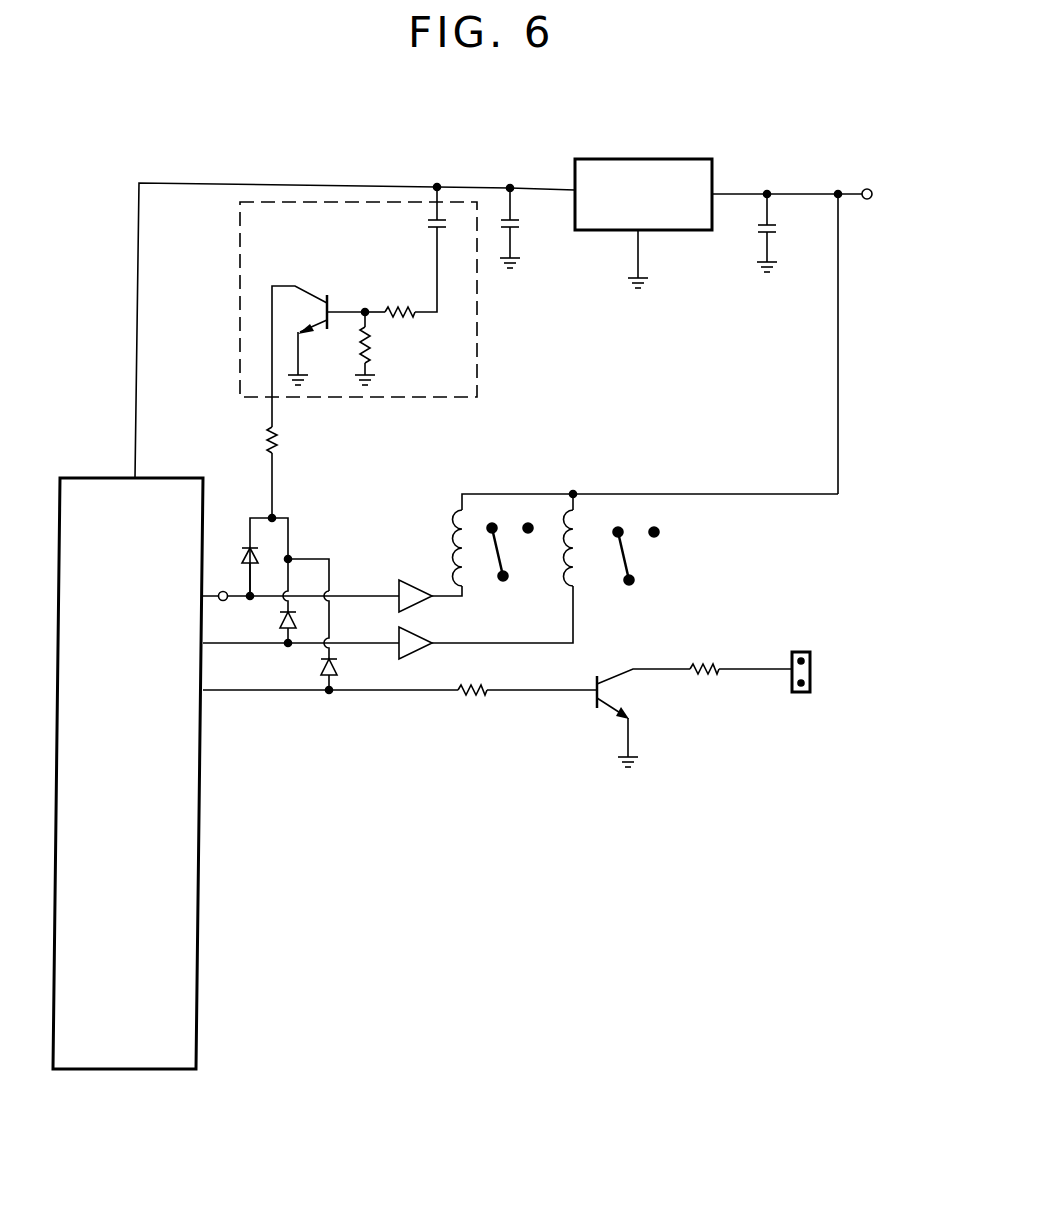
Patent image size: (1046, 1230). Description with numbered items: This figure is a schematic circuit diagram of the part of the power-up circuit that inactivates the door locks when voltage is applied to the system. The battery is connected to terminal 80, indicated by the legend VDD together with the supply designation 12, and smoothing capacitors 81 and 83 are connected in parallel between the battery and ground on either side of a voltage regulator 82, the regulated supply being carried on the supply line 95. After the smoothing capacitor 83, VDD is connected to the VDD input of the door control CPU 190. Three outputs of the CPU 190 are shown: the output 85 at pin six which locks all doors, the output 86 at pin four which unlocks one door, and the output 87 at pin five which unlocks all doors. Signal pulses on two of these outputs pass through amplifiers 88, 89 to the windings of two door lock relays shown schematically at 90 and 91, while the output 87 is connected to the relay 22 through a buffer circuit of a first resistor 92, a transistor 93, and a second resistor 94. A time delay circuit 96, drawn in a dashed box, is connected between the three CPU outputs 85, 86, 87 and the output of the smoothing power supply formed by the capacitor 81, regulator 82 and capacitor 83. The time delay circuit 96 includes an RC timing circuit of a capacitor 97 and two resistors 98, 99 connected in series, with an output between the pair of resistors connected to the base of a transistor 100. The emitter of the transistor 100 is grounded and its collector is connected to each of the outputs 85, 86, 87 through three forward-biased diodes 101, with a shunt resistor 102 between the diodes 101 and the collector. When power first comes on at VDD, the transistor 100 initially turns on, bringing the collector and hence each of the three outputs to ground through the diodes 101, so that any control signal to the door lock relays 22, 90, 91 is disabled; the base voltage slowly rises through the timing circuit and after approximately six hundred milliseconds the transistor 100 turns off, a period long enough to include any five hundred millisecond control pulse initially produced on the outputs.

The VDD power supply 12 is at (896, 204).
The relay 22 is at (801, 693).
The terminal 80 is at (865, 189).
The smoothing capacitor 81 is at (774, 232).
The voltage regulator 82 is at (661, 210).
The smoothing capacitor 83 is at (520, 232).
The output 85 is at (225, 601).
The output 86 is at (224, 646).
The output 87 is at (224, 692).
The amplifier 88 is at (412, 563).
The amplifier 89 is at (422, 637).
The door lock relay 90 is at (513, 486).
The door lock relay 91 is at (640, 486).
The first resistor 92 is at (477, 698).
The transistor 93 is at (618, 690).
The second resistor 94 is at (708, 667).
The power supply line 95 is at (474, 190).
The time delay circuit 96 is at (461, 388).
The capacitor 97 is at (435, 230).
The resistor 98 is at (406, 308).
The resistor 99 is at (371, 340).
The transistor 100 is at (340, 294).
The forward-biased diodes 101 is at (245, 548).
The shunt resistor 102 is at (277, 438).
The door control CPU 190 is at (149, 854).